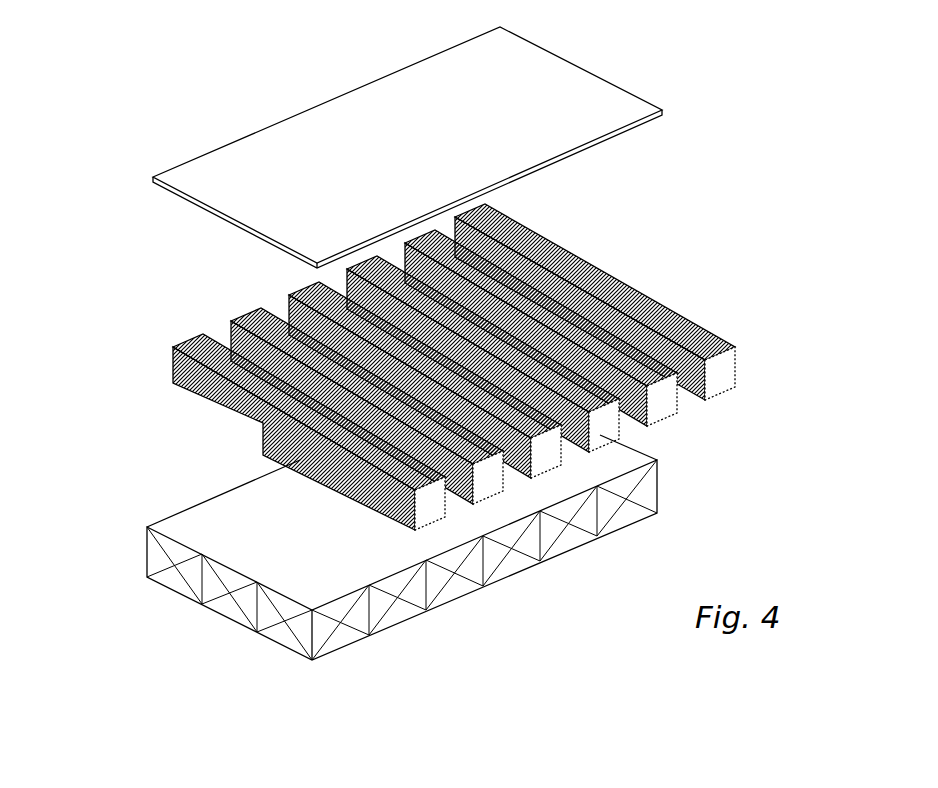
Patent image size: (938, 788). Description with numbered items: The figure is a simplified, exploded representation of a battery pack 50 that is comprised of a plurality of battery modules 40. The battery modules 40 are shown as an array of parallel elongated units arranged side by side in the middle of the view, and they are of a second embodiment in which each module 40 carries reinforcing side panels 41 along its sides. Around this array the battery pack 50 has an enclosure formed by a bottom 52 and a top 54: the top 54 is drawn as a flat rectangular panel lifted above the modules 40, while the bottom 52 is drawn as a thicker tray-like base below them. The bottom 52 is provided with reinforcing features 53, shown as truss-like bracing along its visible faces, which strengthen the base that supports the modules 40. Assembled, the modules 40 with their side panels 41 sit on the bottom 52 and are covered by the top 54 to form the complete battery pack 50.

The battery pack 50 is at (414, 335).
The top 54 is at (597, 90).
The battery module 40 is at (485, 367).
The reinforcing side panel 41 is at (685, 370).
The bottom 52 is at (402, 547).
The reinforcing feature 53 is at (385, 603).